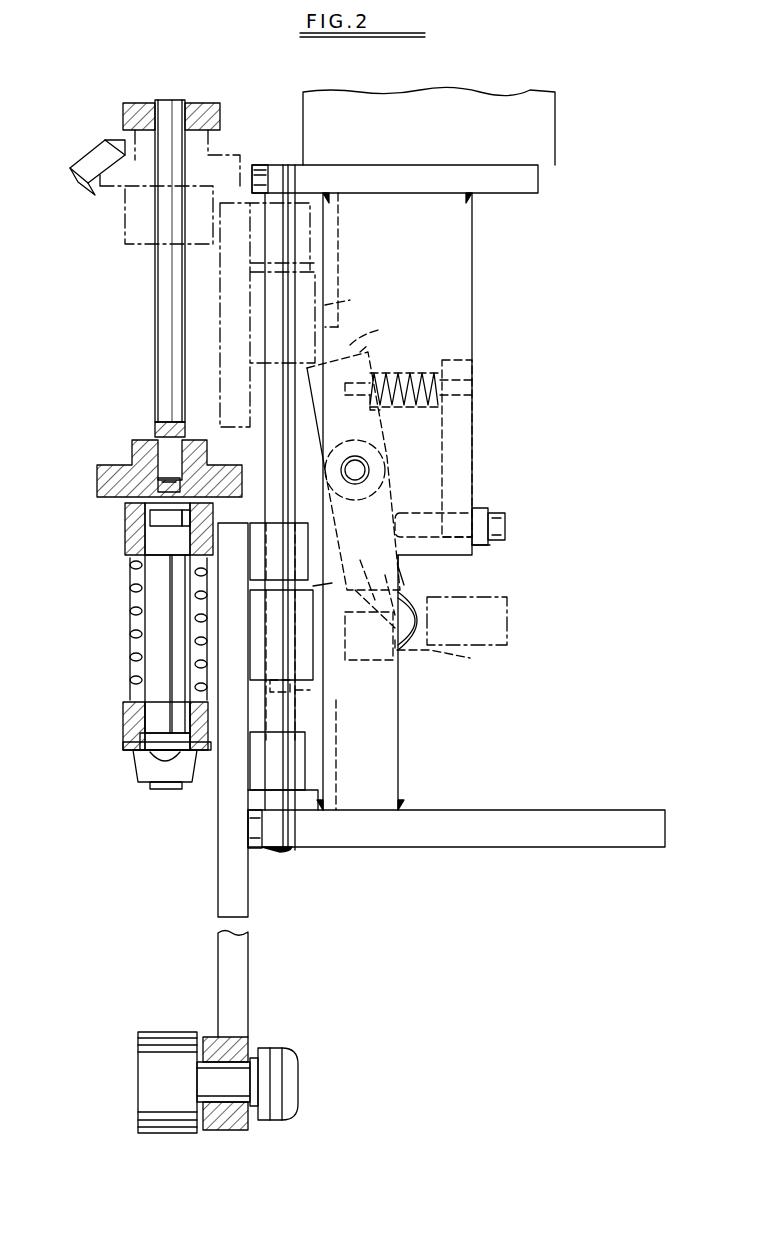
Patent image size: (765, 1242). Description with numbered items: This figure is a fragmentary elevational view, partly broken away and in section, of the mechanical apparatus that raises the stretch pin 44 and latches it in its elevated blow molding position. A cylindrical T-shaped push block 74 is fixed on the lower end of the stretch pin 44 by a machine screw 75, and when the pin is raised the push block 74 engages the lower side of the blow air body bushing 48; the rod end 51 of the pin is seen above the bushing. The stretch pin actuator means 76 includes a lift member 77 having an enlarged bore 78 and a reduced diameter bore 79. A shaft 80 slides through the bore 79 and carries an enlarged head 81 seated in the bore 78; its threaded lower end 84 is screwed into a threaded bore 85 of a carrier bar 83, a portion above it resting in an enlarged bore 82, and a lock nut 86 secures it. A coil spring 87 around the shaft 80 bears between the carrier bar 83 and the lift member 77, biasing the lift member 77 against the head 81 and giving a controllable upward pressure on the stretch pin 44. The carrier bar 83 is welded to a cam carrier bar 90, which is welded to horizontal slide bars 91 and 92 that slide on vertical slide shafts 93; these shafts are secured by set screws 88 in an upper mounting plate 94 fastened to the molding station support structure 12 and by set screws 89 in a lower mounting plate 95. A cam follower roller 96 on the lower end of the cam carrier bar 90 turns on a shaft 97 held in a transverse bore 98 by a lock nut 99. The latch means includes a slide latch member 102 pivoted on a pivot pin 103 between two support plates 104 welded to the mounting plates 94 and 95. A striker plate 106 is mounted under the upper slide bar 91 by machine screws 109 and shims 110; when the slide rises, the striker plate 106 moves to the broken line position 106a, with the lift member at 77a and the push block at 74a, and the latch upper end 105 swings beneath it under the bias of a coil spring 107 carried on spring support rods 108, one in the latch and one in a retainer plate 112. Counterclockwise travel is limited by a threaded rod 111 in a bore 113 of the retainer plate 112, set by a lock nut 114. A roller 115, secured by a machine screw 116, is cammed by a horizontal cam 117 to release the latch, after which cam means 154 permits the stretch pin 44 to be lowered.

The molding station support structure 12 is at (525, 92).
The stretch pin 44 is at (162, 334).
The blow air body bushing 48 is at (118, 122).
The rod end 51 is at (172, 105).
The push block 74 is at (97, 476).
The raised position of push block 74a is at (92, 190).
The machine screw 75 is at (178, 478).
The stretch pin actuator means 76 is at (120, 583).
The lift member 77 is at (145, 538).
The raised position of lift member 77a is at (128, 248).
The enlarged bore 78 is at (205, 515).
The reduced diameter bore 79 is at (123, 560).
The shaft 80 is at (152, 627).
The shaft head 81 is at (150, 525).
The enlarged bore 82 is at (128, 712).
The carrier bar 83 is at (128, 738).
The threaded lower end 84 is at (160, 790).
The threaded bore 85 is at (135, 750).
The lock nut 86 is at (150, 773).
The coil spring 87 is at (135, 660).
The set screws 88 is at (260, 165).
The set screws 89 is at (256, 850).
The cam carrier bar 90 is at (242, 1004).
The upper slide bar 91 is at (298, 525).
The lower slide bar 92 is at (298, 777).
The slide shafts 93 is at (295, 717).
The upper mounting plate 94 is at (538, 180).
The lower mounting plate 95 is at (560, 812).
The cam follower roller 96 is at (148, 1086).
The shaft 97 is at (233, 1100).
The transverse bore 98 is at (262, 1070).
The lock nut 99 is at (282, 1082).
The slide latch member 102 is at (375, 360).
The pivot pin 103 is at (360, 470).
The support plates 104 is at (468, 322).
The latch member upper end 105 is at (365, 340).
The striker plate 106 is at (312, 662).
The raised position of striker plate 106a is at (330, 296).
The coil spring 107 is at (400, 420).
The spring support rods 108 is at (497, 412).
The machine screws 109 is at (300, 692).
The shims 110 is at (313, 586).
The threaded rod 111 is at (433, 508).
The retainer plate 112 is at (470, 425).
The bore 113 is at (500, 506).
The lock nut 114 is at (492, 545).
The cam follower roller 115 is at (428, 610).
The machine screw 116 is at (459, 658).
The horizontal cam 117 is at (510, 620).
The cam means 154 is at (72, 175).